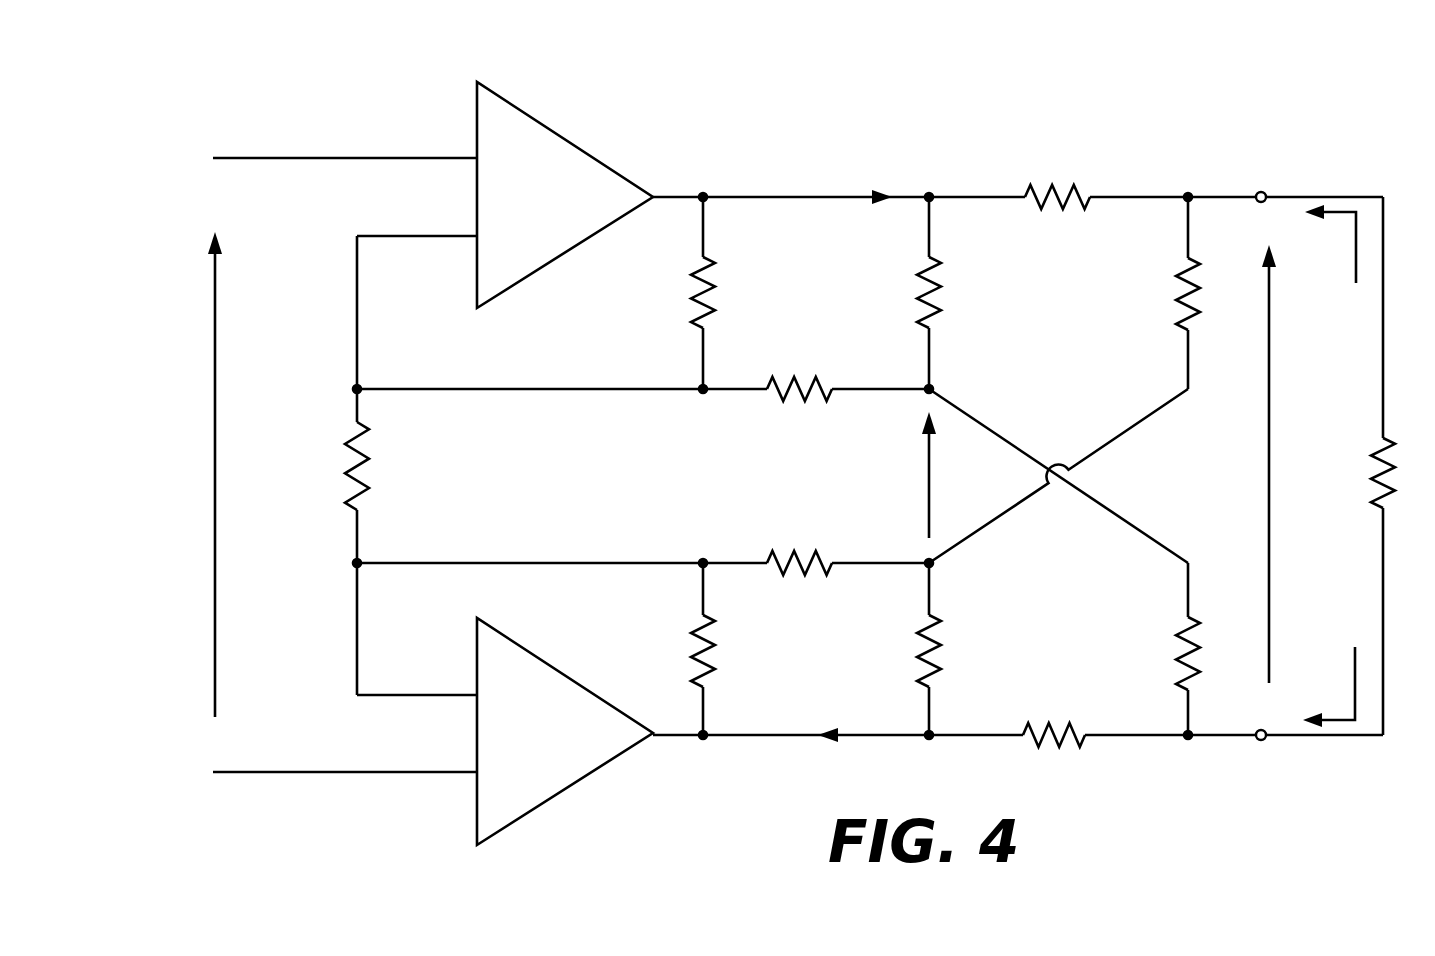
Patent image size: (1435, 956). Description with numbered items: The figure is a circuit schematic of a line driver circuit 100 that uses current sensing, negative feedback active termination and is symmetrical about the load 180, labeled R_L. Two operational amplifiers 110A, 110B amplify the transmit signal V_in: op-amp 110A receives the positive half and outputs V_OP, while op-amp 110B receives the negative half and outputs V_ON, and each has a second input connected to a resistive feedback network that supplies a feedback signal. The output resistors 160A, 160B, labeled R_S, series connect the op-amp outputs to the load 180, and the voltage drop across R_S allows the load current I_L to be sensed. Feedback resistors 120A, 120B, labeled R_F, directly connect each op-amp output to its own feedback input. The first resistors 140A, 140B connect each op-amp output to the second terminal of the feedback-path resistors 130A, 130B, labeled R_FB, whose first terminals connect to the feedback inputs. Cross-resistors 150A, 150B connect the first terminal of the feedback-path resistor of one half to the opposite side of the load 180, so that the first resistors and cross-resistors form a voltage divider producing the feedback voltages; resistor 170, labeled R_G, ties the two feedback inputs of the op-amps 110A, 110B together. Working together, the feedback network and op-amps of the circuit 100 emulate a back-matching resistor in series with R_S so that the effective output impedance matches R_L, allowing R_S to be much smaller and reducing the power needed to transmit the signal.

The line driver circuit 100 is at (968, 62).
The operational amplifier 110A is at (532, 114).
The operational amplifier 110B is at (607, 765).
The feedback resistor 120A is at (696, 298).
The feedback resistor 120B is at (690, 670).
The resistor 130A is at (822, 390).
The resistor 130B is at (828, 560).
The resistor 140A is at (918, 298).
The resistor 140B is at (938, 672).
The cross-resistor 150A is at (1194, 288).
The cross-resistor 150B is at (1182, 645).
The output resistor 160A is at (1082, 193).
The output resistor 160B is at (1072, 740).
The resistor 170 is at (372, 474).
The load 180 is at (1392, 496).